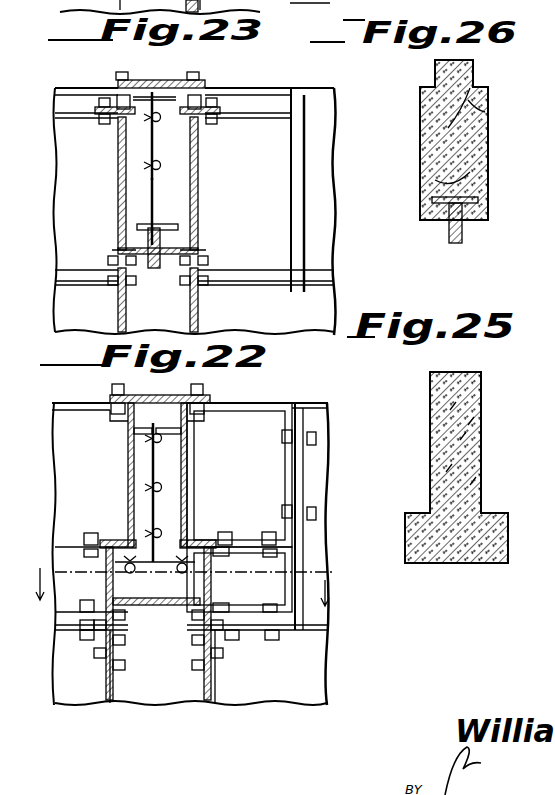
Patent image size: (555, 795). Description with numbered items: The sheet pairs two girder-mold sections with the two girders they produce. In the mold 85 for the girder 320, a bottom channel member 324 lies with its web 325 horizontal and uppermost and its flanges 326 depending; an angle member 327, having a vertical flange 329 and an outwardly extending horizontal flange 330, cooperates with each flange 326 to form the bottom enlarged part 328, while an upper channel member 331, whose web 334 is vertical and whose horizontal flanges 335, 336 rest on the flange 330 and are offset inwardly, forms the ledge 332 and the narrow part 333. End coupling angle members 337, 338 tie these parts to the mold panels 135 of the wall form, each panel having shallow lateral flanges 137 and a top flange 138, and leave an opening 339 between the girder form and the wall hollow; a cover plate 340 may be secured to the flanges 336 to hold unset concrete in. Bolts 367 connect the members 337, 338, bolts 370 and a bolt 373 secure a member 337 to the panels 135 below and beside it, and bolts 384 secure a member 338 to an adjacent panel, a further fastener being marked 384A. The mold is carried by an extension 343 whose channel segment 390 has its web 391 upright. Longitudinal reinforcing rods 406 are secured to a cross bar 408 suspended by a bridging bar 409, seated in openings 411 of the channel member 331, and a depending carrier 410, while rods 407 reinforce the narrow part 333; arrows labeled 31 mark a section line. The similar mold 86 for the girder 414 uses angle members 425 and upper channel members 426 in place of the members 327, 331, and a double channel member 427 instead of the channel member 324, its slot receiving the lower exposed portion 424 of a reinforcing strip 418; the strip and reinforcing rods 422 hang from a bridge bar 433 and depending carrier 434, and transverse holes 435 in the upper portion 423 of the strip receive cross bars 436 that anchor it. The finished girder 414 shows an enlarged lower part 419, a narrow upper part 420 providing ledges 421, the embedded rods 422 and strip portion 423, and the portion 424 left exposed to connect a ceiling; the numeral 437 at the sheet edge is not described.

In FIG. 23, the girder mold 86 is at (118, 85).
In FIG. 23, the upper channel members 426 is at (205, 95).
In FIG. 23, the bridge bar 433 is at (172, 122).
In FIG. 23, the angle members 425 is at (119, 178).
In FIG. 23, the depending carrier 434 is at (162, 205).
In FIG. 23, the cross bars 436 is at (178, 228).
In FIG. 26, the cross bars 436 is at (479, 200).
In FIG. 23, the double channel member 427 is at (162, 244).
In FIG. 23, the mold panels 135 is at (312, 190).
In FIG. 22, the mold panels 135 is at (300, 457).
In FIG. 23, the lateral flanges 137 is at (306, 238).
In FIG. 22, the lateral flanges 137 is at (302, 475).
In FIG. 23, the top flange 138 is at (254, 289).
In FIG. 22, the top flange 138 is at (310, 630).
In FIG. 26, the narrow upper part 420 is at (435, 70).
In FIG. 26, the ledges 421 is at (475, 84).
In FIG. 26, the girder 414 is at (489, 96).
In FIG. 26, the reinforcing rods 422 is at (486, 120).
In FIG. 26, the enlarged lower part 419 is at (420, 140).
In FIG. 26, the transverse holes 435 is at (435, 180).
In FIG. 26, the upper portion of strip 423 is at (488, 183).
In FIG. 26, the reinforcing strip 418 is at (462, 224).
In FIG. 26, the lower exposed portion of strip 424 is at (455, 244).
In FIG. 26, the member 437 is at (536, 216).
In FIG. 25, the girder 320 is at (480, 373).
In FIG. 25, the reinforcing rods 407 is at (455, 450).
In FIG. 25, the narrow part 333 is at (482, 420).
In FIG. 25, the ledge 332 is at (414, 512).
In FIG. 25, the reinforcing rods 406 is at (426, 540).
In FIG. 25, the bottom enlarged part 328 is at (466, 556).
In FIG. 22, the girder mold 85 is at (112, 398).
In FIG. 22, the bridging bar 409 is at (160, 388).
In FIG. 22, the cover plate 340 is at (205, 400).
In FIG. 22, the upper horizontal flange 336 is at (212, 410).
In FIG. 22, the upper channel members 331 is at (126, 425).
In FIG. 22, the openings 411 is at (239, 475).
In FIG. 22, the end coupling angle member 338 is at (60, 460).
In FIG. 22, the depending carrier 410 is at (135, 450).
In FIG. 22, the opening 339 is at (172, 460).
In FIG. 22, the web 334 is at (128, 473).
In FIG. 22, the cross bar 408 is at (185, 505).
In FIG. 22, the bolts 367 is at (85, 535).
In FIG. 22, the lower horizontal flange 335 is at (234, 502).
In FIG. 22, the angle members 327 is at (98, 540).
In FIG. 22, the horizontal flange 330 is at (88, 534).
In FIG. 22, the frame member 384A is at (320, 420).
In FIG. 22, the bolts 384 is at (318, 513).
In FIG. 22, the direction arrow 31 is at (191, 574).
In FIG. 22, the vertical flange 329 is at (170, 600).
In FIG. 22, the web 325 is at (155, 577).
In FIG. 22, the bottom channel member 324 is at (239, 579).
In FIG. 22, the end coupling angle member 337 is at (64, 617).
In FIG. 22, the flanges 326 is at (118, 620).
In FIG. 22, the bolt 373 is at (322, 604).
In FIG. 22, the bolts 370 is at (275, 640).
In FIG. 22, the channel segment 390 is at (112, 706).
In FIG. 22, the channel member extension 343 is at (200, 706).
In FIG. 22, the web 391 is at (165, 725).